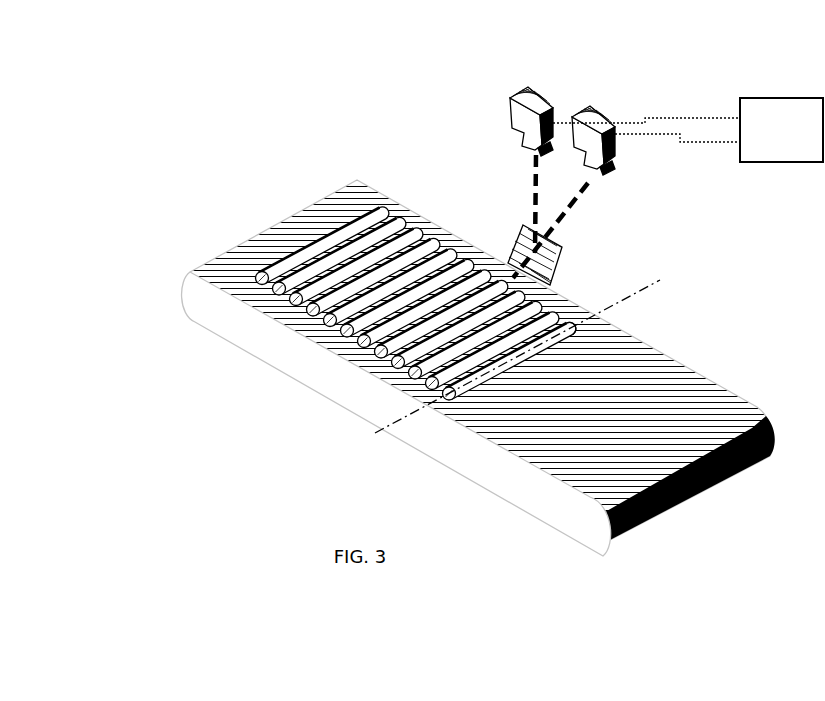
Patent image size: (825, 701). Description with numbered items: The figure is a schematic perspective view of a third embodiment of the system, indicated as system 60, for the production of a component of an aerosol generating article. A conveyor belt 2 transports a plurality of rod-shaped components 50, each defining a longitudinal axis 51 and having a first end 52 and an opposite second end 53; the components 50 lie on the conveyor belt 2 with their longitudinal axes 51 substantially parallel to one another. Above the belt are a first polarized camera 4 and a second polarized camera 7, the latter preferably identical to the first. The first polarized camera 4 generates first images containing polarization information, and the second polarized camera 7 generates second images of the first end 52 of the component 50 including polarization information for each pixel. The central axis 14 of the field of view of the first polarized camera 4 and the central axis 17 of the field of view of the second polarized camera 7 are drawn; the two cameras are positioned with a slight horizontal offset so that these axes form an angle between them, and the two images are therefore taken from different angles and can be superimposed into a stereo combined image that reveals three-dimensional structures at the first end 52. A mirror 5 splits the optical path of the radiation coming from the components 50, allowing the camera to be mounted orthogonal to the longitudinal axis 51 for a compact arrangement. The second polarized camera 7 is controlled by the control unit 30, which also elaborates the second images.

The conveyor belt 2 is at (596, 430).
The first polarized camera 4 is at (557, 87).
The mirror 5 is at (581, 264).
The second polarized camera 7 is at (597, 113).
The central axis of the field of view of the first polarized camera 14 is at (533, 192).
The central axis of the field of view of the second polarized camera 17 is at (565, 200).
The control unit 30 is at (763, 147).
The component 50 is at (416, 324).
The longitudinal axis 51 is at (648, 286).
The first end 52 is at (575, 316).
The second end 53 is at (452, 401).
The system 60 is at (258, 200).